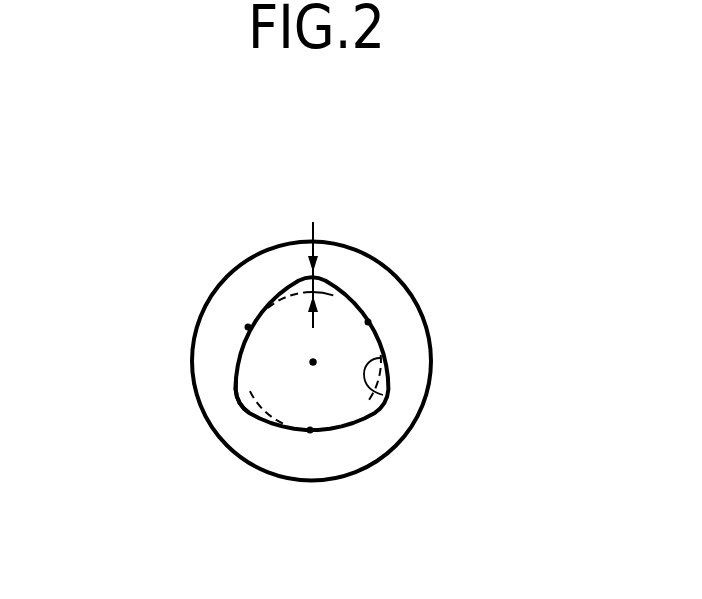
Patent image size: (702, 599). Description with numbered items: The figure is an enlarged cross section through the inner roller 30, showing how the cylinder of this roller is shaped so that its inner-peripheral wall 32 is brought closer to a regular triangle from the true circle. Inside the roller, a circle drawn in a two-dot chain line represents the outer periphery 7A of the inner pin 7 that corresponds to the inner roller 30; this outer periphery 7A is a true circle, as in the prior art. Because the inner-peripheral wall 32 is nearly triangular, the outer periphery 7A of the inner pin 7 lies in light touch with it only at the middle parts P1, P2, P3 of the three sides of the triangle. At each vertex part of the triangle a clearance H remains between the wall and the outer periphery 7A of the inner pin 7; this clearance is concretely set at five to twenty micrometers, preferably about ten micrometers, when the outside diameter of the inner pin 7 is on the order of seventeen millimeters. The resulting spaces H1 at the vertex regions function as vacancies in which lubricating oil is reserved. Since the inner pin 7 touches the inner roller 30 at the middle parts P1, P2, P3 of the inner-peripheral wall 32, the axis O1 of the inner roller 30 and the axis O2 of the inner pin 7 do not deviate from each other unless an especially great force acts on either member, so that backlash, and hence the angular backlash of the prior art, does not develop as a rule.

The inner roller 30 is at (377, 268).
The inner-peripheral wall 32 is at (380, 358).
The inner pin 7 is at (290, 362).
The outer periphery 7A is at (230, 382).
The clearance H is at (297, 284).
The spaces H1 is at (326, 288).
The middle part P1 is at (370, 321).
The middle part P2 is at (310, 431).
The middle part P3 is at (247, 326).
The axis of the inner roller O1 is at (313, 362).
The axis of the inner pin O2 is at (313, 362).